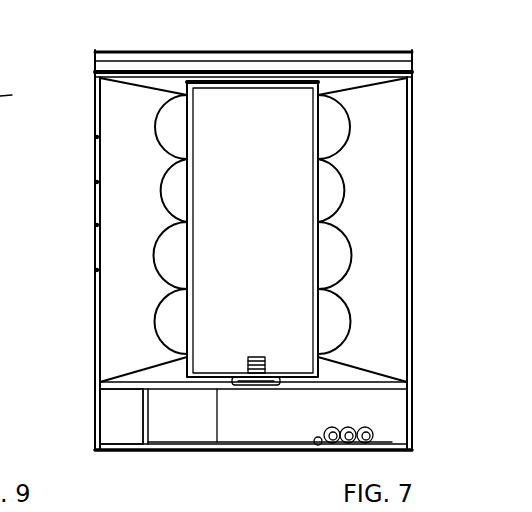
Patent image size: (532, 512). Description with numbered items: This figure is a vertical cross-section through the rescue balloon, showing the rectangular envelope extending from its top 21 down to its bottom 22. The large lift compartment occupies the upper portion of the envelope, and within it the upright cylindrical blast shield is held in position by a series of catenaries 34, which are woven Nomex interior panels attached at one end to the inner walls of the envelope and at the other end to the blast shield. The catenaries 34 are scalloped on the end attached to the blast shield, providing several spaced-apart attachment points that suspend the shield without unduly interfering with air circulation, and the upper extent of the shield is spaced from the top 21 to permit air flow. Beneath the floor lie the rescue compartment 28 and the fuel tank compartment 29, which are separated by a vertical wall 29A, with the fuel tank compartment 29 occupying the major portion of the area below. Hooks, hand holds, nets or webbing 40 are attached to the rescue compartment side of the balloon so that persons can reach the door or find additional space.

The top 21 is at (250, 51).
The bottom 22 is at (250, 452).
The rescue compartment 28 is at (120, 413).
The fuel tank compartment 29 is at (398, 417).
The vertical wall 29A is at (143, 427).
The catenaries 34 is at (120, 112).
The webbing 40 is at (95, 137).